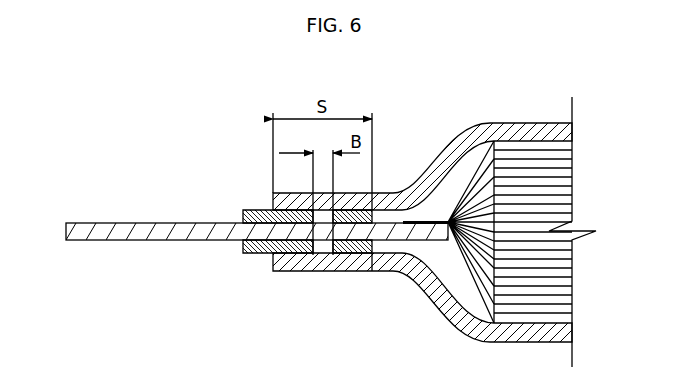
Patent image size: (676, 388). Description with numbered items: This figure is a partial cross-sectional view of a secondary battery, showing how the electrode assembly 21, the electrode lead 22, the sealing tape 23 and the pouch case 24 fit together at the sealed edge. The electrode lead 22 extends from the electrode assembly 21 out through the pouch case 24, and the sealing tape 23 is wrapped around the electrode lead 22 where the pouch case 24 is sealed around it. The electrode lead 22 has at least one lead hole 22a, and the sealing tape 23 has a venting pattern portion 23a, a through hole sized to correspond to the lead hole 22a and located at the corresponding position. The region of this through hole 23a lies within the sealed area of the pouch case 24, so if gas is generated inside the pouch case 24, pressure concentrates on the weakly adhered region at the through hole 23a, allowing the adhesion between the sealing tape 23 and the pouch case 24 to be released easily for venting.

The electrode assembly 21 is at (468, 283).
The electrode lead 22 is at (142, 227).
The lead hole 22a is at (323, 226).
The sealing tape 23 is at (247, 210).
The venting pattern portion 23a is at (319, 212).
The pouch case 24 is at (514, 123).